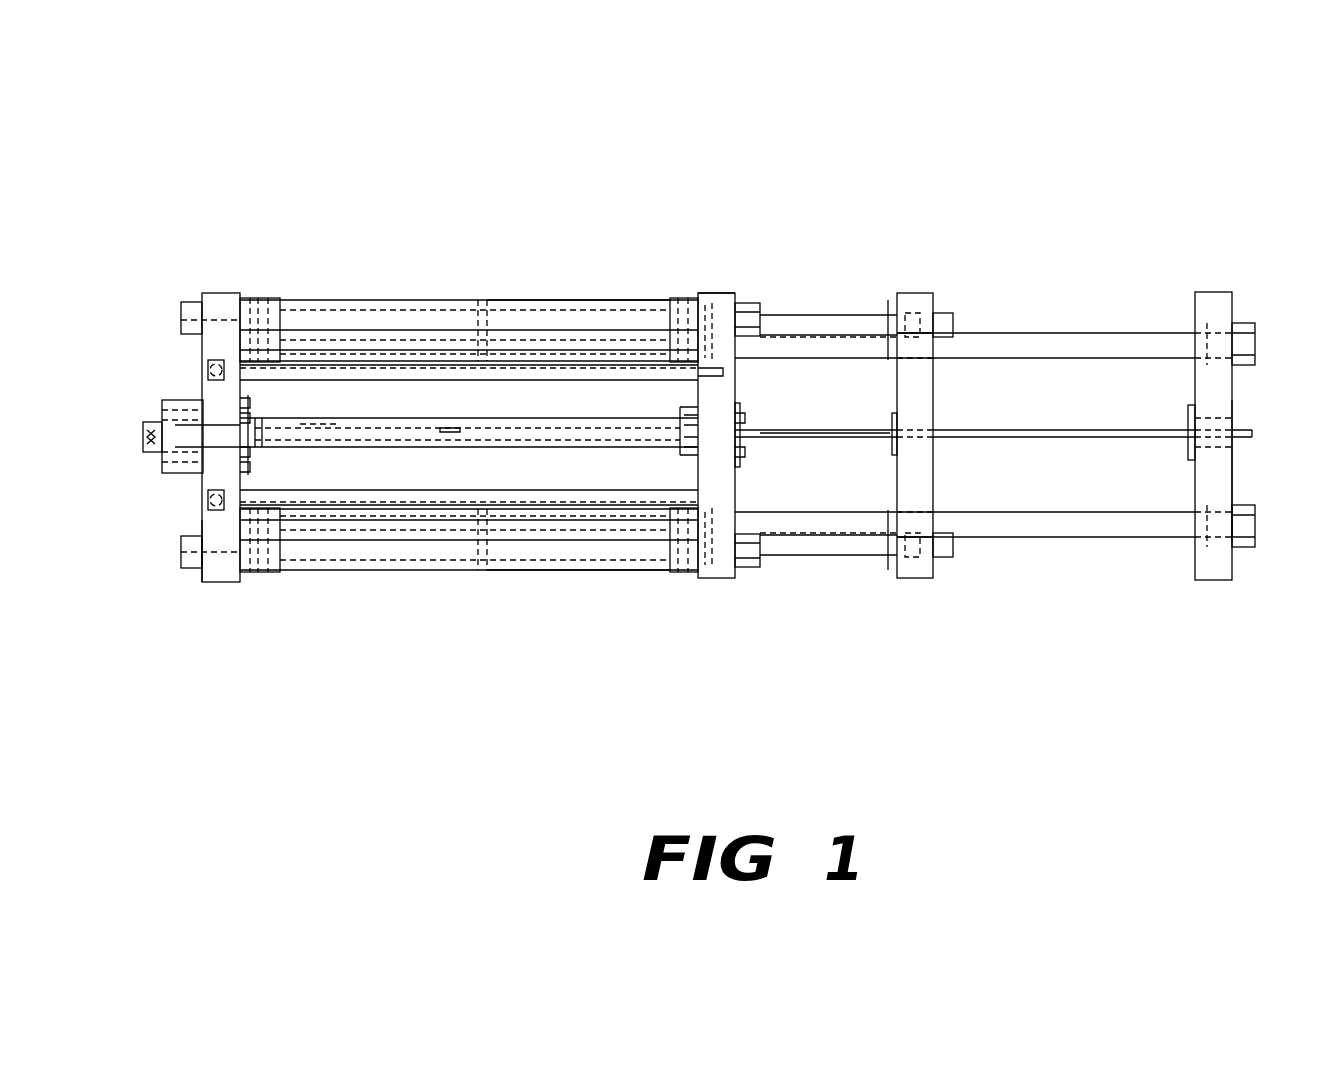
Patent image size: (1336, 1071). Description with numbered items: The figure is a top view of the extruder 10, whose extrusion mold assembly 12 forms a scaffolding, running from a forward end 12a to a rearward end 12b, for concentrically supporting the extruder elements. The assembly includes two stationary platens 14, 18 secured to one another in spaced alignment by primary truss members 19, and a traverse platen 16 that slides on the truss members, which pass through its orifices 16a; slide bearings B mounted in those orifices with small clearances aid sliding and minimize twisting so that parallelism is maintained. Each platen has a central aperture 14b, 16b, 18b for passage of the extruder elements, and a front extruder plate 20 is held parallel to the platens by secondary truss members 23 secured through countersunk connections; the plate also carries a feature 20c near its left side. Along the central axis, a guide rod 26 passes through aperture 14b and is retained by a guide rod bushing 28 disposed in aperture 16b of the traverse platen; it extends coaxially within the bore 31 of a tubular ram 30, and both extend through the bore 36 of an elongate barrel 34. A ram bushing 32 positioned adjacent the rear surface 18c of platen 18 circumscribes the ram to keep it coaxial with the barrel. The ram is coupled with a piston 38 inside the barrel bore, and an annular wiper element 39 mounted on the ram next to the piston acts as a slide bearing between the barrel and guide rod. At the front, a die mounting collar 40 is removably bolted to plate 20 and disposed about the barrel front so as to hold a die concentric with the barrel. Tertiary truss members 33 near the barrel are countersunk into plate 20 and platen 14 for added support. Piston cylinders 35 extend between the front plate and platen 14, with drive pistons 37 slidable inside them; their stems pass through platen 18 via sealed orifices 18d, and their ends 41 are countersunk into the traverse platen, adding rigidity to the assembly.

The extruder 10 is at (1010, 130).
The extrusion mold assembly 12 is at (710, 286).
The forward end 12a is at (185, 528).
The rearward end 12b is at (1232, 490).
The stationary platen 14 is at (1210, 292).
The central aperture 14b is at (1232, 420).
The traverse platen 16 is at (915, 293).
The orifices 16a is at (937, 365).
The central aperture 16b is at (935, 440).
The stationary platen 18 is at (722, 293).
The central aperture 18b is at (738, 428).
The rear surface 18c is at (740, 478).
The orifices 18d is at (755, 300).
The primary truss members 19 is at (1073, 332).
The front extruder plate 20 is at (205, 293).
The port 20c is at (205, 508).
The secondary truss members 23 is at (368, 303).
The guide rod 26 is at (823, 440).
The guide rod bushing 28 is at (935, 424).
The tubular ram 30 is at (828, 428).
The bore 31 is at (545, 428).
The ram bushing 32 is at (738, 418).
The tertiary truss members 33 is at (576, 380).
The barrel 34 is at (320, 424).
The piston cylinders 35 is at (528, 303).
The bore 36 is at (368, 426).
The drive pistons 37 is at (478, 303).
The piston 38 is at (450, 428).
The wiper element 39 is at (800, 332).
The die mounting collar 40 is at (172, 400).
The ends 41 is at (888, 300).
The slide bearings B is at (897, 362).